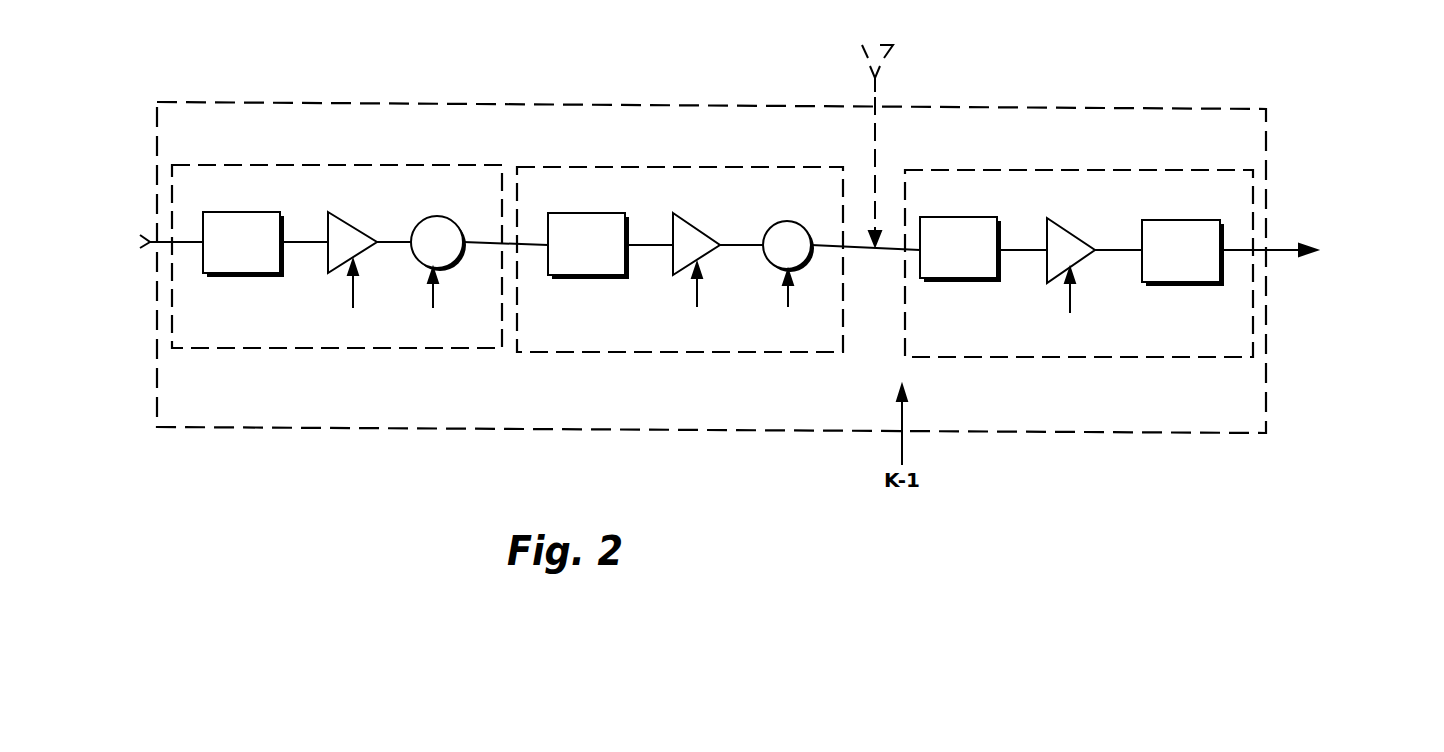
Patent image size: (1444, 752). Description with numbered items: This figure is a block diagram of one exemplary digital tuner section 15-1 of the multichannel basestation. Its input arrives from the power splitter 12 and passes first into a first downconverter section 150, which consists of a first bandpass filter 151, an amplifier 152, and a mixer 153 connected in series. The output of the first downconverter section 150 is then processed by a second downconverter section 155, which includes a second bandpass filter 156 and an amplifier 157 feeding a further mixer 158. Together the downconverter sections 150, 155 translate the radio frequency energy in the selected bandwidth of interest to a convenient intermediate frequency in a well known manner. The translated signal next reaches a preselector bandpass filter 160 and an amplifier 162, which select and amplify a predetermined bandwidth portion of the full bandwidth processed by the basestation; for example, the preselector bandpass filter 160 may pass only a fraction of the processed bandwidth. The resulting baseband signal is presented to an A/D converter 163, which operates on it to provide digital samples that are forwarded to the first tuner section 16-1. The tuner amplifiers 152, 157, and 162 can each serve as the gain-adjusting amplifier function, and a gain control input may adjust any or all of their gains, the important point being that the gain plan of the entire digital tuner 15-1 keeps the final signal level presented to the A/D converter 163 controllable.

The digital tuner section 15-1 is at (1052, 109).
The power splitter 12 is at (139, 242).
The first downconverter section 150 is at (280, 165).
The first bandpass filter 151 is at (221, 212).
The amplifier 152 is at (348, 224).
The mixer 153 is at (438, 216).
The second downconverter section 155 is at (650, 167).
The second bandpass filter 156 is at (566, 213).
The amplifier 157 is at (687, 226).
The mixer 158 is at (788, 221).
The preselector bandpass filter 160 is at (933, 217).
The amplifier 162 is at (1061, 227).
The A/D converter 163 is at (1158, 220).
The first tuner section 16-1 is at (1326, 253).